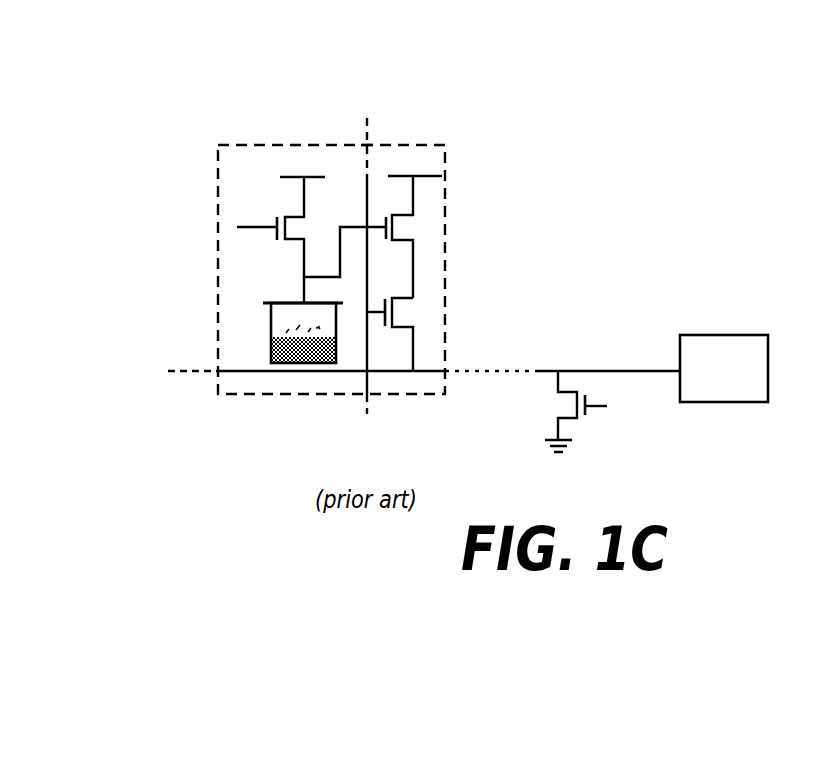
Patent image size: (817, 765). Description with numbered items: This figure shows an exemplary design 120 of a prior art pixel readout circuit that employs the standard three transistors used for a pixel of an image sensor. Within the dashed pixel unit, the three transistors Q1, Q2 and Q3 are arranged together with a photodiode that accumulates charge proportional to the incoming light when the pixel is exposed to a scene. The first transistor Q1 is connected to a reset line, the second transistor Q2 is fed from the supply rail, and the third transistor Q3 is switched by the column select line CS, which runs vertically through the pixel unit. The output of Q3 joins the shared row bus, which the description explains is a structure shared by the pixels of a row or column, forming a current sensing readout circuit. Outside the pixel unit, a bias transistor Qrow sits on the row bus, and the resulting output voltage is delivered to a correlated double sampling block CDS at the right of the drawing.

The exemplary design 120 is at (449, 236).
The reset transistor Q1 is at (306, 240).
The source follower transistor Q2 is at (404, 237).
The row select transistor Q3 is at (395, 334).
The row bias transistor Qrow is at (581, 411).
The correlated double sampling circuit CDS is at (724, 368).
The column select line CS is at (367, 256).